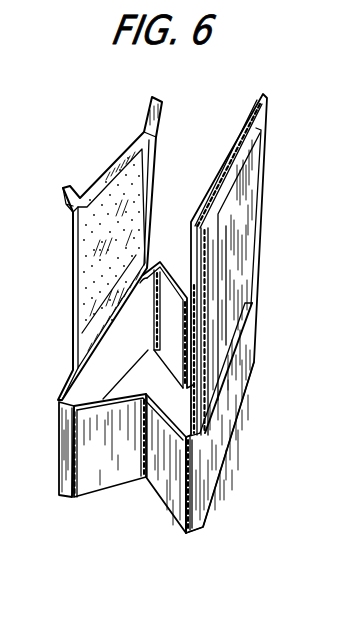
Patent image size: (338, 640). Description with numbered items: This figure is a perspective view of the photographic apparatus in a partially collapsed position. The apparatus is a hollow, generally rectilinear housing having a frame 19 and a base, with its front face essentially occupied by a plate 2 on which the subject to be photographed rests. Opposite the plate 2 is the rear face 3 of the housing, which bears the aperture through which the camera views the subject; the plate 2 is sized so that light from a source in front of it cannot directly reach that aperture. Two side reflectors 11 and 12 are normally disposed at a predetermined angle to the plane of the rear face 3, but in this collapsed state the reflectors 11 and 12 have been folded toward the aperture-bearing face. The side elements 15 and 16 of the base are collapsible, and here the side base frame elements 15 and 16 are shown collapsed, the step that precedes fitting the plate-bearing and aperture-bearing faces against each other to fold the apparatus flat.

The plate 2 is at (88, 268).
The rear face 3 is at (228, 422).
The side reflector 11 is at (245, 232).
The side reflector 12 is at (215, 370).
The side base frame element 15 is at (169, 270).
The side base frame element 16 is at (107, 472).
The frame 19 is at (63, 432).